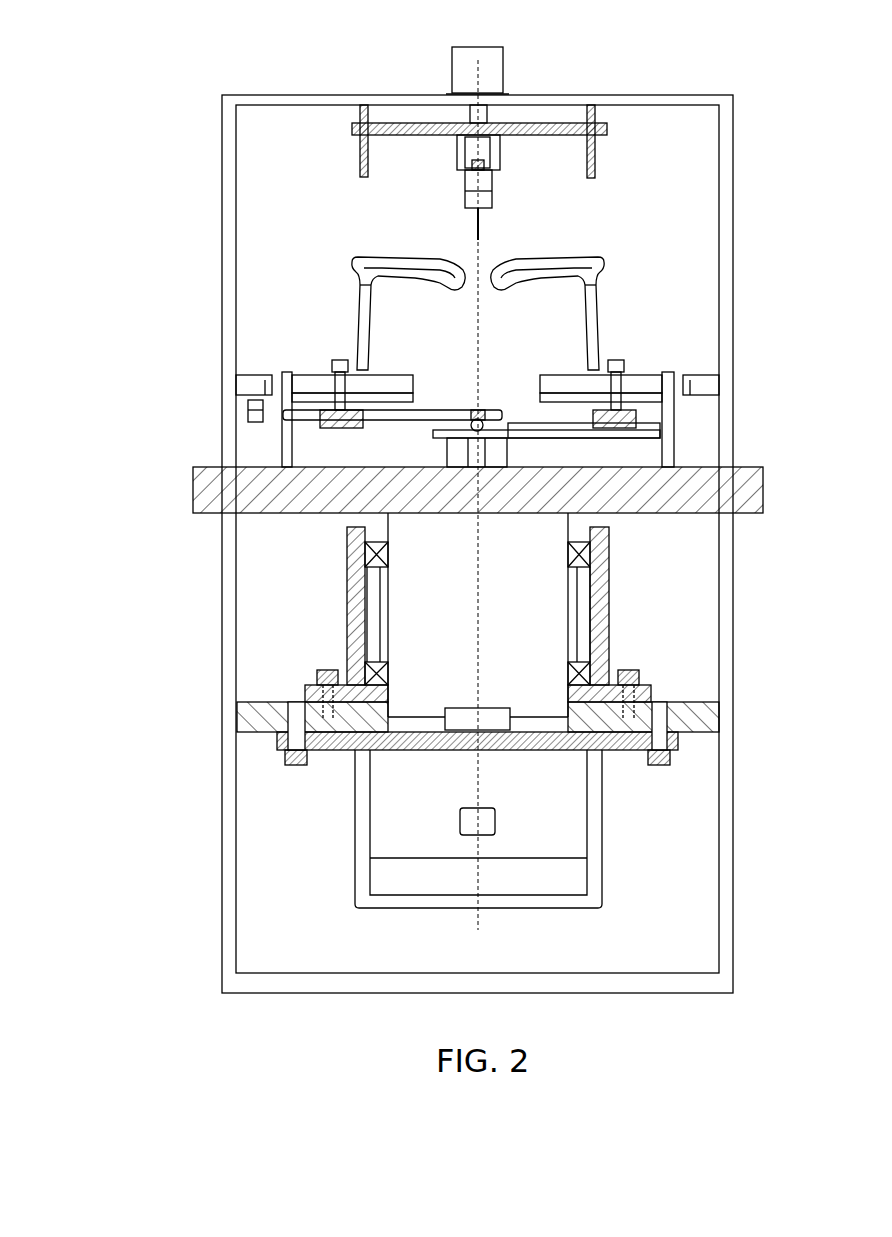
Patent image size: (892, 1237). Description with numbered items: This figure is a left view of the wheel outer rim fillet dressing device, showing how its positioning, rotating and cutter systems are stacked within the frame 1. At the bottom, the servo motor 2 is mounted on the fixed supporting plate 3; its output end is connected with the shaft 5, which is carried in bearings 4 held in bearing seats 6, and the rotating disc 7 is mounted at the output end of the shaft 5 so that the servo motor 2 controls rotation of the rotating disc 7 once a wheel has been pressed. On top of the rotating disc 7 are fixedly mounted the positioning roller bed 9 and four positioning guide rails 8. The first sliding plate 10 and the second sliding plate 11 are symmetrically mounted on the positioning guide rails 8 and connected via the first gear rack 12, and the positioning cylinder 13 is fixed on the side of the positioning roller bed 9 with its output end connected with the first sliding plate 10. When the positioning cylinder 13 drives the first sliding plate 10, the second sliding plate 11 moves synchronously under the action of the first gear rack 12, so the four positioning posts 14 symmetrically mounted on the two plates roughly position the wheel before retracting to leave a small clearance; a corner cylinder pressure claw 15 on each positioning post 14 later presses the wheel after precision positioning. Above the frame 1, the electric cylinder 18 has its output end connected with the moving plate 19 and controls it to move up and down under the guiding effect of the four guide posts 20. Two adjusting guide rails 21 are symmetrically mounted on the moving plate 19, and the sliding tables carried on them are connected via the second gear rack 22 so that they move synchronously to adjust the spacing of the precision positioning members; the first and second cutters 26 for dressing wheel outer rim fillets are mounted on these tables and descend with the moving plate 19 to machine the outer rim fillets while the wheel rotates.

The frame 1 is at (232, 957).
The servo motor 2 is at (362, 883).
The fixed supporting plate 3 is at (250, 727).
The bearing 4 is at (383, 677).
The shaft 5 is at (415, 641).
The bearing seat 6 is at (355, 585).
The rotating disc 7 is at (213, 485).
The positioning guide rail 8 is at (337, 450).
The positioning roller bed 9 is at (340, 370).
The first sliding plate 10 is at (350, 386).
The second sliding plate 11 is at (628, 407).
The first gear rack 12 is at (475, 418).
The positioning cylinder 13 is at (258, 412).
The positioning post 14 is at (607, 385).
The corner cylinder pressure claw 15 is at (612, 366).
The electric cylinder 18 is at (472, 64).
The moving plate 19 is at (352, 126).
The guide post 20 is at (363, 167).
The adjusting guide rail 21 is at (487, 130).
The second gear rack 22 is at (500, 157).
The cutter for dressing wheel outer rim fillets 26 is at (545, 227).